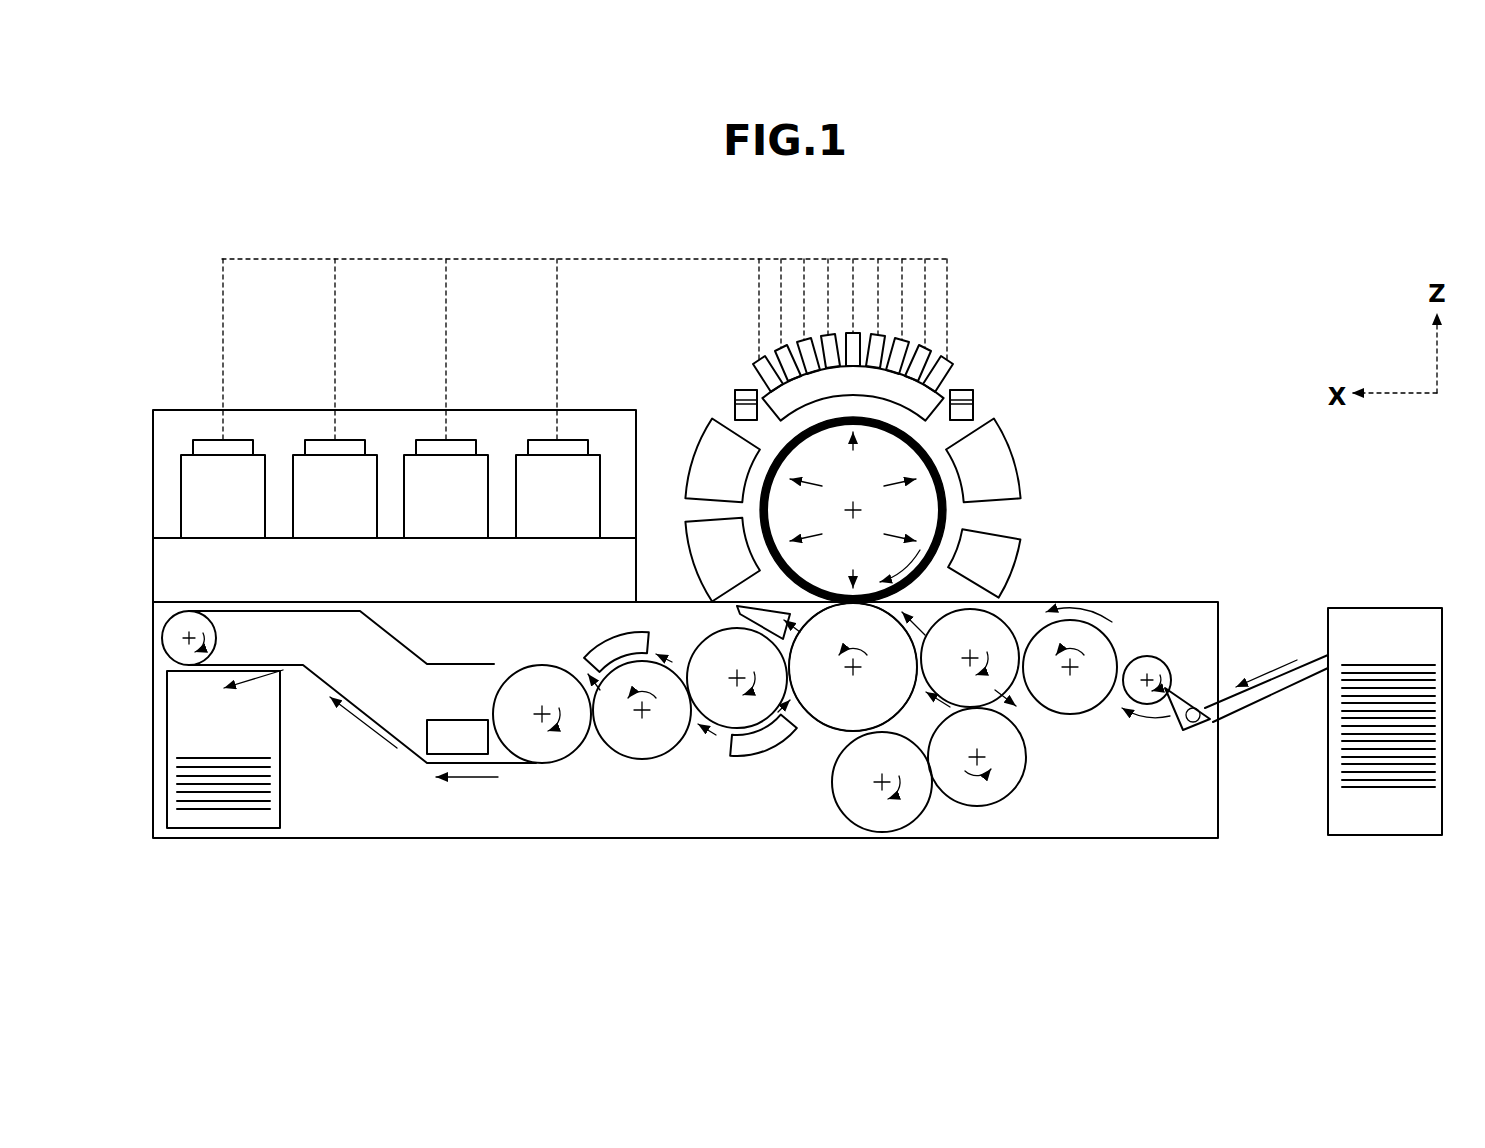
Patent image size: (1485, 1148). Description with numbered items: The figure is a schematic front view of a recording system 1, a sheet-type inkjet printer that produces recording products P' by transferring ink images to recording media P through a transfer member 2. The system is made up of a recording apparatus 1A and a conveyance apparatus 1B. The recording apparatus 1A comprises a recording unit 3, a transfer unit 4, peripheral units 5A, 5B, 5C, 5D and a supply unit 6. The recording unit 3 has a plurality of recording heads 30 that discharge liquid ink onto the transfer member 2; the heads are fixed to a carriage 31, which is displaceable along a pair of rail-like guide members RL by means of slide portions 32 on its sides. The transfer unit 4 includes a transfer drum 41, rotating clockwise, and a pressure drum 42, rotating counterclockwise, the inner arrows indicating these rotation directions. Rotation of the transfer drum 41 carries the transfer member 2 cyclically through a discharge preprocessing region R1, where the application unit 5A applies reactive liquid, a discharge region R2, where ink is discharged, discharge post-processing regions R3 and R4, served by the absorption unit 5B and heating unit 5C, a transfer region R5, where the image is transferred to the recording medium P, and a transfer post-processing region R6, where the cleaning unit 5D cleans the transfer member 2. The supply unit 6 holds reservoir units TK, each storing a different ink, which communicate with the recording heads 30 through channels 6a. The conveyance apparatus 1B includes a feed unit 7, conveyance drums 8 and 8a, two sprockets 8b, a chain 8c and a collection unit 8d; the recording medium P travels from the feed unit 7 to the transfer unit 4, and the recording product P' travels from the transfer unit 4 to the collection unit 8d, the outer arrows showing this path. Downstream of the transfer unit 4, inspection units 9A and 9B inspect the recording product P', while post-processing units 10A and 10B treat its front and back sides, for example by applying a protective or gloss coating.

The recording system 1 is at (1193, 272).
The recording apparatus 1A is at (1130, 418).
The conveyance apparatus 1B is at (1326, 527).
The transfer member 2 is at (923, 573).
The recording unit 3 is at (975, 352).
The transfer unit 4 is at (812, 750).
The peripheral unit 5A is at (694, 456).
The peripheral unit 5B is at (1015, 458).
The peripheral unit 5C is at (1013, 566).
The peripheral unit 5D is at (694, 567).
The supply unit 6 is at (181, 409).
The channels 6a is at (278, 258).
The feed unit 7 is at (1388, 607).
The conveyance drums 8 is at (642, 760).
The conveyance drums 8a is at (882, 832).
The sprockets 8b is at (162, 638).
The chain 8c is at (400, 645).
The collection unit 8d is at (280, 760).
The inspection unit 9A is at (737, 607).
The inspection unit 9B is at (460, 719).
The post-processing unit 10A is at (588, 645).
The post-processing unit 10B is at (741, 756).
The recording heads 30 is at (758, 357).
The carriage 31 is at (768, 404).
The slide portions 32 is at (736, 392).
The transfer drum 41 is at (945, 524).
The pressure drum 42 is at (830, 731).
The reservoir units TK is at (192, 500).
The guide members RL is at (735, 408).
The recording medium P is at (1405, 696).
The recording product P' is at (188, 740).
The discharge preprocessing region R1 is at (815, 493).
The discharge region R2 is at (852, 455).
The discharge post-processing region R3 is at (893, 493).
The discharge post-processing region R4 is at (893, 528).
The transfer region R5 is at (852, 566).
The transfer post-processing region R6 is at (815, 528).